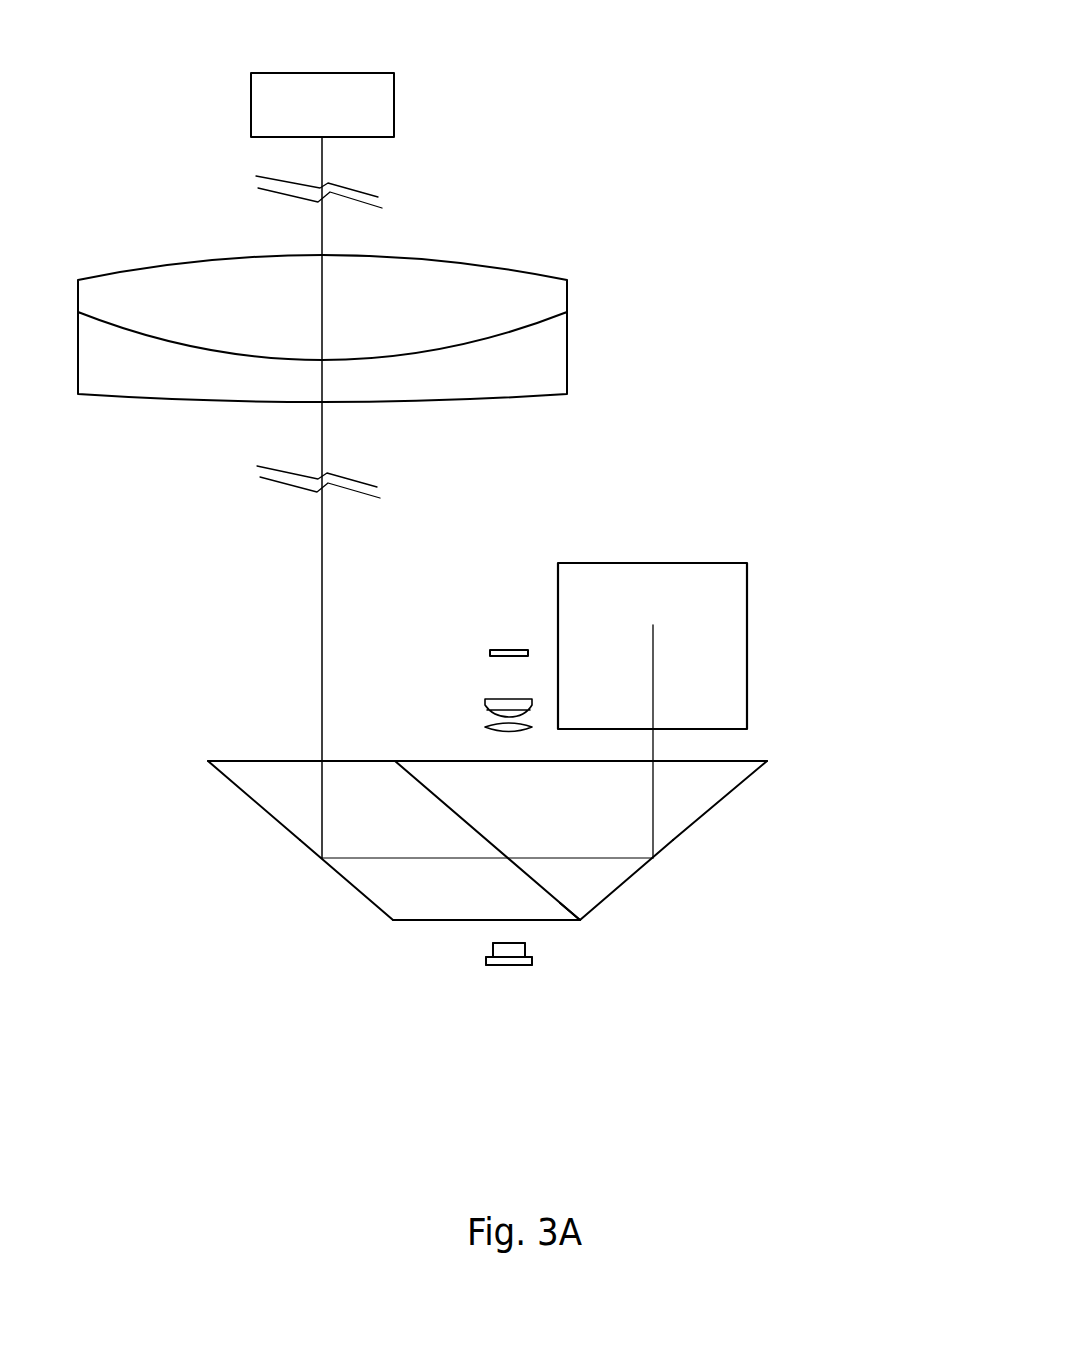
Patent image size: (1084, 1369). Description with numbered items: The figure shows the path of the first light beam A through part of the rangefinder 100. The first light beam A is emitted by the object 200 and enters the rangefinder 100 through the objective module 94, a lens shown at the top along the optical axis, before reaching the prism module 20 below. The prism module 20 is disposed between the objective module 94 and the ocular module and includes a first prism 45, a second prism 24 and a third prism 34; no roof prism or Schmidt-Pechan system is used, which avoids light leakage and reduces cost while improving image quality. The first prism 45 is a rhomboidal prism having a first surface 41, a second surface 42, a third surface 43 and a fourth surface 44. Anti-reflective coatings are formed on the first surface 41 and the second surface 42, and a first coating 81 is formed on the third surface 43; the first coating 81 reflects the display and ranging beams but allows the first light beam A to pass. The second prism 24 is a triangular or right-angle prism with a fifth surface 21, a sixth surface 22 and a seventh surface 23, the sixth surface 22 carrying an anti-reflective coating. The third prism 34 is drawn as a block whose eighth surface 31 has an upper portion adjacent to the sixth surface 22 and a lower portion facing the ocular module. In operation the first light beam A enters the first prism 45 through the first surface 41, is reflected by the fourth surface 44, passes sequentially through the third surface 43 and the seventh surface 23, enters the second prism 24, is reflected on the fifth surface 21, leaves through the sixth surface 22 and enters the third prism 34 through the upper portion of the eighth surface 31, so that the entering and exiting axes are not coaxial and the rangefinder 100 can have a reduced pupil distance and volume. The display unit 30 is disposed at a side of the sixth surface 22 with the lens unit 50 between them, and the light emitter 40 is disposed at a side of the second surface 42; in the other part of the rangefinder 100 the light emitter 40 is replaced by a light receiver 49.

The rangefinder 100 is at (895, 211).
The object 200 is at (324, 74).
The objective module 94 is at (428, 313).
The first light beam A is at (320, 607).
The prism module 20 is at (770, 457).
The fifth surface 21 is at (657, 850).
The sixth surface 22 is at (710, 759).
The seventh surface 23 is at (557, 897).
The second prism 24 is at (697, 800).
The display unit 30 is at (522, 648).
The eighth surface 31 is at (713, 729).
The third prism 34 is at (705, 614).
The light emitter 40 is at (500, 955).
The light receiver 49 is at (509, 954).
The first surface 41 is at (267, 760).
The second surface 42 is at (447, 922).
The third surface 43 is at (540, 888).
The fourth surface 44 is at (345, 878).
The first prism 45 is at (303, 811).
The lens unit 50 is at (497, 707).
The first coating 81 is at (578, 923).